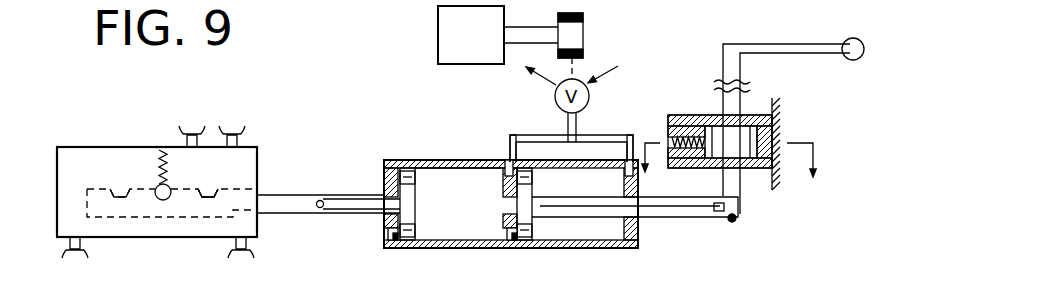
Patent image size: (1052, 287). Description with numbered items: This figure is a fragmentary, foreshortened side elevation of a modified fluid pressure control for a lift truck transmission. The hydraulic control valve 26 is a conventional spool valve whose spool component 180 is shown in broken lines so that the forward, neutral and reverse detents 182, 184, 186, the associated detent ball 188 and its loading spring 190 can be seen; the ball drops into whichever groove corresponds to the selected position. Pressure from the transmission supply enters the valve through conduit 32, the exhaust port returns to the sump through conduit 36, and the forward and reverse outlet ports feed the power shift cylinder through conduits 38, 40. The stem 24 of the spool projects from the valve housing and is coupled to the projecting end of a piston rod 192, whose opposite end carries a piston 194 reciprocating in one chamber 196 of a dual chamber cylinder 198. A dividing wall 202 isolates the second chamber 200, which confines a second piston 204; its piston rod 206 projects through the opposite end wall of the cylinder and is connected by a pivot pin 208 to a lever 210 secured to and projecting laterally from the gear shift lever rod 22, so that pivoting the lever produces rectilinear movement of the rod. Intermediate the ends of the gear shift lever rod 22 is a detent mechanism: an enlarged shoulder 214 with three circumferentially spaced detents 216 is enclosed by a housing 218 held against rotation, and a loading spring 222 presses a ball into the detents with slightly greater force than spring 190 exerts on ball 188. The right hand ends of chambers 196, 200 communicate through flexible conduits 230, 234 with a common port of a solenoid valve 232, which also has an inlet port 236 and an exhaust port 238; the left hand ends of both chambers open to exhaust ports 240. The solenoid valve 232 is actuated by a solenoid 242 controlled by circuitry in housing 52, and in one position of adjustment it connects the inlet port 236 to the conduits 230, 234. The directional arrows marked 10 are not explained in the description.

The direction arrows 10 is at (735, 149).
The gear shift lever rod 22 is at (738, 85).
The stem 24 is at (293, 213).
The control valve 26 is at (64, 168).
The conduit 32 is at (189, 133).
The conduit 36 is at (238, 133).
The conduit 38 is at (82, 251).
The conduit 40 is at (240, 251).
The housing 52 is at (475, 50).
The spool component 180 is at (177, 218).
The forward detent 182 is at (122, 190).
The neutral detent 184 is at (158, 200).
The reverse detent 186 is at (208, 192).
The detent ball 188 is at (133, 252).
The loading spring 190 is at (162, 182).
The piston rod 192 is at (346, 200).
The piston 194 is at (418, 228).
The chamber 196 is at (474, 230).
The dual chamber cylinder 198 is at (433, 161).
The second chamber 200 is at (592, 232).
The dividing wall 202 is at (505, 178).
The second piston 204 is at (545, 234).
The piston rod 206 is at (672, 208).
The pivot pin 208 is at (733, 222).
The lever 210 is at (742, 207).
The enlarged shoulder 214 is at (722, 152).
The detents 216 is at (712, 135).
The housing 218 is at (776, 110).
The loading spring 222 is at (680, 137).
The flexible conduit 230 is at (509, 138).
The solenoid valve 232 is at (566, 111).
The flexible conduit 234 is at (628, 137).
The inlet port 236 is at (600, 80).
The exhaust port 238 is at (555, 88).
The exhaust ports 240 is at (395, 242).
The solenoid 242 is at (578, 33).